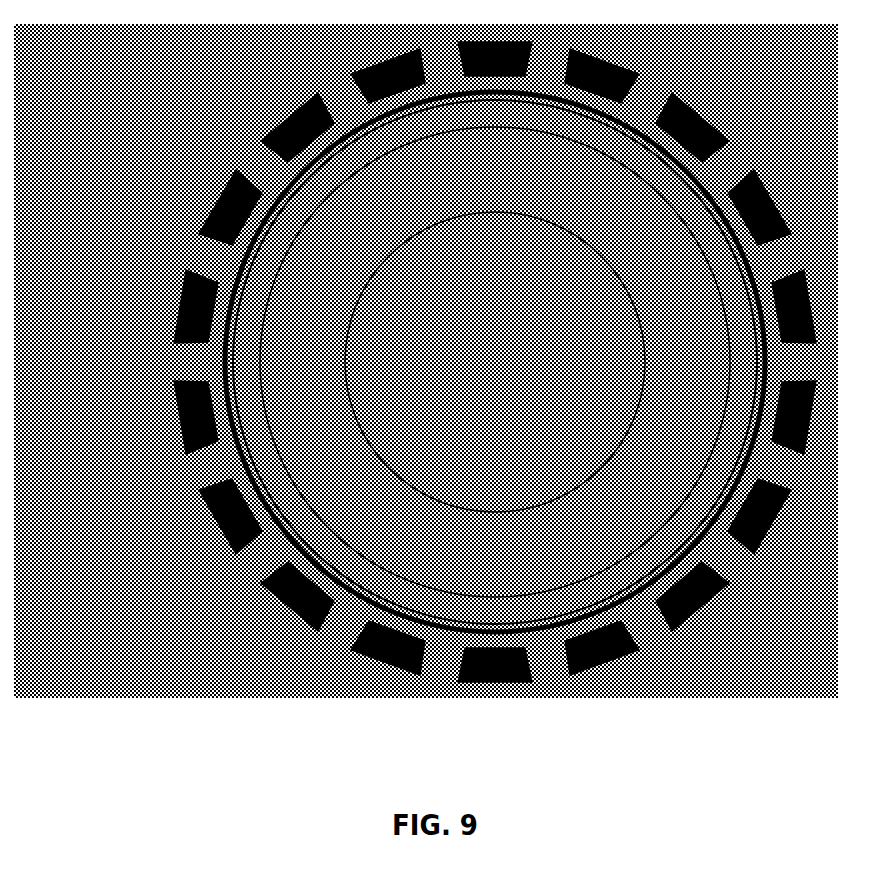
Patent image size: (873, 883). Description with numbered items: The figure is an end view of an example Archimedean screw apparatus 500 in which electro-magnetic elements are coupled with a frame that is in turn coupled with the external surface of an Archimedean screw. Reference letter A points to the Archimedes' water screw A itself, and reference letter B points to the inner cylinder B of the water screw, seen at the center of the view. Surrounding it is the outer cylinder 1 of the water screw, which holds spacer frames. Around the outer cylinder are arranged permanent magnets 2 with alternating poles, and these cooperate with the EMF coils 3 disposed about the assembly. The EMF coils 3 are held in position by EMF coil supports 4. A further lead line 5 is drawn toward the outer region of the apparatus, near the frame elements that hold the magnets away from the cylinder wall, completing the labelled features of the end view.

The Archimedean screw apparatus 500 is at (214, 78).
The Archimedes' water screw A is at (455, 248).
The inner cylinder B is at (475, 355).
The outer cylinder 1 is at (335, 368).
The permanent magnets 2 is at (240, 400).
The EMF coils 3 is at (215, 472).
The EMF coil supports 4 is at (200, 518).
The stator region 5 is at (355, 560).